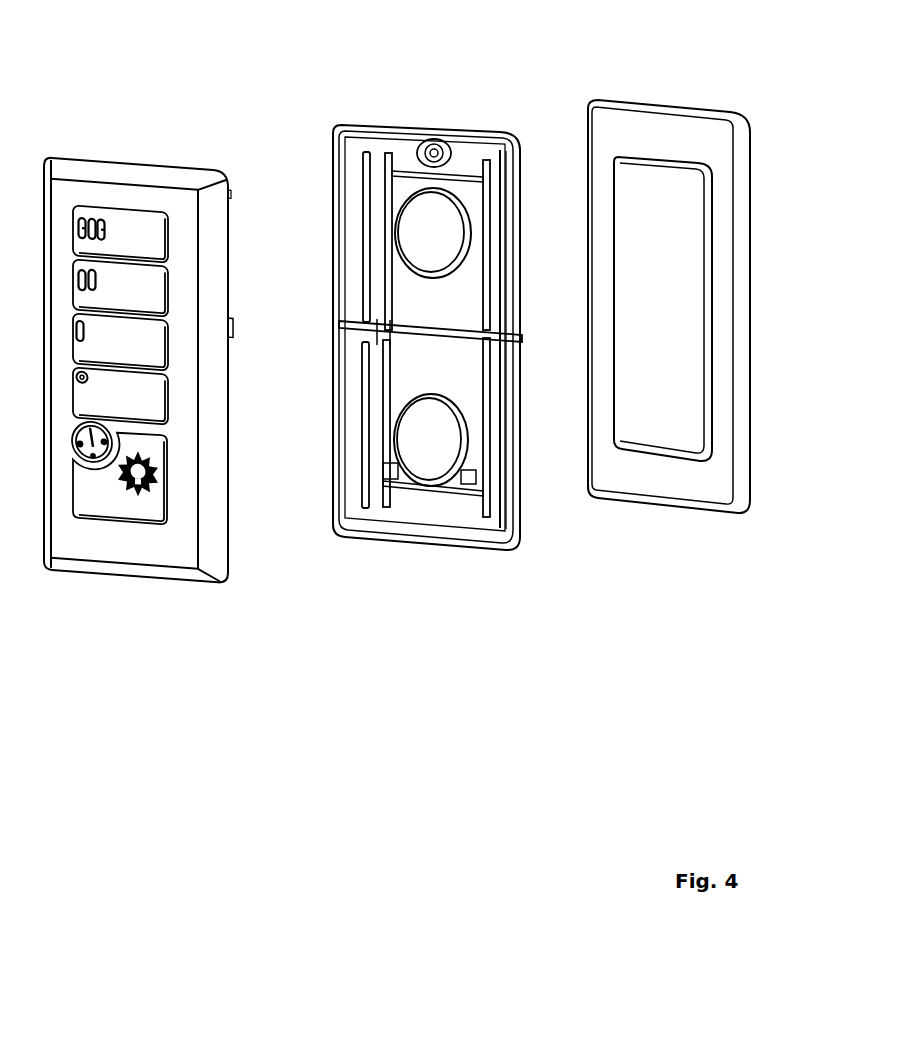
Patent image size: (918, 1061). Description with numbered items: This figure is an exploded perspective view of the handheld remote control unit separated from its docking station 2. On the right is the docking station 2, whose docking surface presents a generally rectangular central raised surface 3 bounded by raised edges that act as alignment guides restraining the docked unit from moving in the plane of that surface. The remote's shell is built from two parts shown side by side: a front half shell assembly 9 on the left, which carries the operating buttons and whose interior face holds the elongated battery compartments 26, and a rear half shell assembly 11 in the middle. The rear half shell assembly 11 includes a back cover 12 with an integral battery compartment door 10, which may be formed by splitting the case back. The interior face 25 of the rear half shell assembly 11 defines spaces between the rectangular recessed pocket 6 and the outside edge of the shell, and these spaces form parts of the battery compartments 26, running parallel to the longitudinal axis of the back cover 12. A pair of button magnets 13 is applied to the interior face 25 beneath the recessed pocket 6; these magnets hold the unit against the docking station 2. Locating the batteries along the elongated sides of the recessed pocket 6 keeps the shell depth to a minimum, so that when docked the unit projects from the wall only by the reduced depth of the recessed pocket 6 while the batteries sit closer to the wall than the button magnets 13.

The docking station 2 is at (708, 362).
The central raised surface 3 is at (657, 290).
The recessed pocket 6 is at (424, 362).
The front half shell assembly 9 is at (155, 603).
The battery compartment door 10 is at (358, 540).
The rear half shell assembly 11 is at (413, 347).
The back cover 12 is at (377, 122).
The button magnets 13 is at (438, 218).
The interior face 25 is at (387, 230).
The battery compartments 26 is at (497, 230).